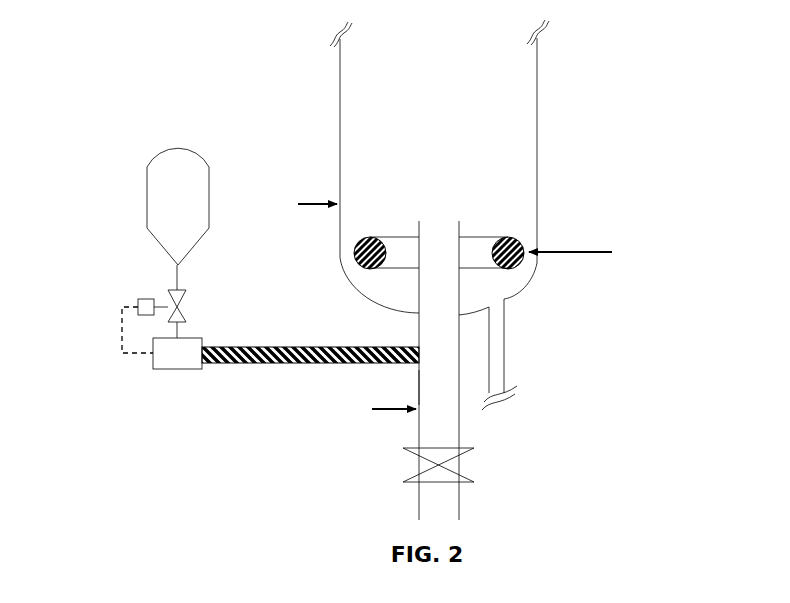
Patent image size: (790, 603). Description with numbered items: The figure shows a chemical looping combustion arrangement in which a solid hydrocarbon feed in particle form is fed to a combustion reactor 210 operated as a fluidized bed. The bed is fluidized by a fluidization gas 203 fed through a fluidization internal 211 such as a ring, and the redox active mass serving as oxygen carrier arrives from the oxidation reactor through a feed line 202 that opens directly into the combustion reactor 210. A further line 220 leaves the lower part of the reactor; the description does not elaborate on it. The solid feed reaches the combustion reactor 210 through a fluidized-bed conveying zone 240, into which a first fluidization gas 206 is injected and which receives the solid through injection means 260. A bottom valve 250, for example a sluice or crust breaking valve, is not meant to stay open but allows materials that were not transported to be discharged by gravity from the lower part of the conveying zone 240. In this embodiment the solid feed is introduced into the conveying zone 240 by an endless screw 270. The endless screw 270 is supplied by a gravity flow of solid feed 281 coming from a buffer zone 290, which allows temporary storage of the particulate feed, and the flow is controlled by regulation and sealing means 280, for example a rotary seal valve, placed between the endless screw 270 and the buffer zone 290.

The feed line 202 is at (322, 204).
The fluidization gas 203 is at (565, 248).
The first fluidization gas 206 is at (388, 411).
The combustion reactor 210 is at (537, 97).
The fluidization internal 211 is at (483, 237).
The outlet conduit 220 is at (503, 347).
The conveying zone 240 is at (418, 388).
The bottom valve 250 is at (410, 477).
The means for injecting the solid hydrocarbon feed 260 is at (418, 343).
The endless screw 270 is at (242, 363).
The regulation and sealing means 280 is at (175, 291).
The gravity flow of solid feed 281 is at (178, 327).
The buffer zone 290 is at (185, 147).